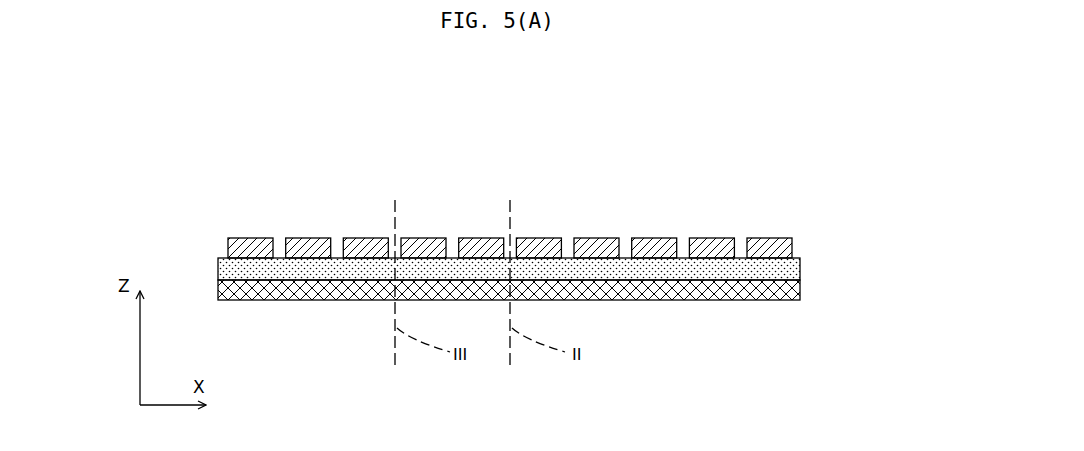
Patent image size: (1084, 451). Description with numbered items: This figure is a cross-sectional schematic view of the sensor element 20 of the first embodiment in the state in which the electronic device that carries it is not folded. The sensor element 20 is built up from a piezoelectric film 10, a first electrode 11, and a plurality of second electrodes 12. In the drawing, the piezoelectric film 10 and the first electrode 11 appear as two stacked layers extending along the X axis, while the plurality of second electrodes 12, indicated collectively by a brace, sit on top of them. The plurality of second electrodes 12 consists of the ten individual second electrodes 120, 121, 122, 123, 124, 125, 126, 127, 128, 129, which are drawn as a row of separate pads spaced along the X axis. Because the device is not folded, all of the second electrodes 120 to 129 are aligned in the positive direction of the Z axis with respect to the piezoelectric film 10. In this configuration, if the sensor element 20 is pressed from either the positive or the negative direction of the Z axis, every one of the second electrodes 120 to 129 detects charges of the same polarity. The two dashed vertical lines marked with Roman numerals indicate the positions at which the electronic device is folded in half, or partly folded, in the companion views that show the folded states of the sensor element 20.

The piezoelectric film 10 is at (800, 267).
The first electrode 11 is at (800, 292).
The second electrodes 12 is at (233, 134).
The sensor element 20 is at (813, 132).
The second electrode 120 is at (250, 237).
The second electrode 121 is at (307, 237).
The second electrode 122 is at (365, 237).
The second electrode 123 is at (422, 237).
The second electrode 124 is at (480, 237).
The second electrode 125 is at (538, 237).
The second electrode 126 is at (596, 237).
The second electrode 127 is at (653, 237).
The second electrode 128 is at (711, 237).
The second electrode 129 is at (768, 237).